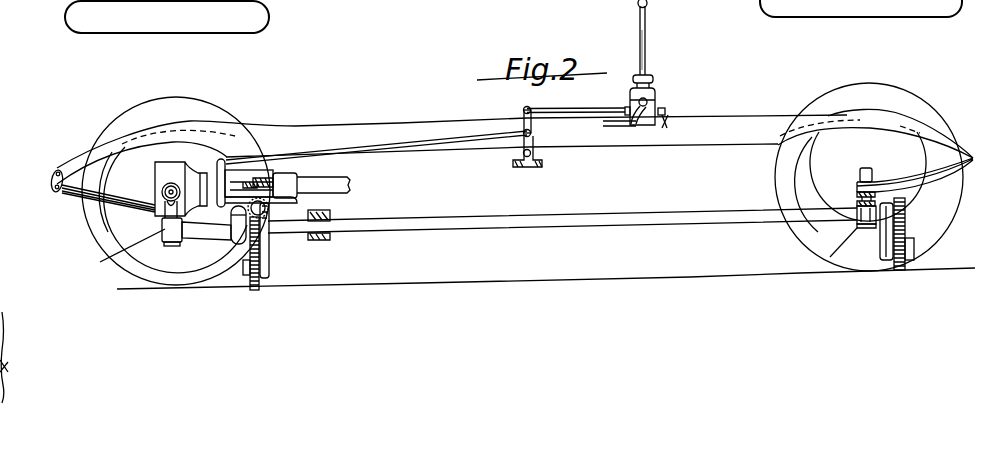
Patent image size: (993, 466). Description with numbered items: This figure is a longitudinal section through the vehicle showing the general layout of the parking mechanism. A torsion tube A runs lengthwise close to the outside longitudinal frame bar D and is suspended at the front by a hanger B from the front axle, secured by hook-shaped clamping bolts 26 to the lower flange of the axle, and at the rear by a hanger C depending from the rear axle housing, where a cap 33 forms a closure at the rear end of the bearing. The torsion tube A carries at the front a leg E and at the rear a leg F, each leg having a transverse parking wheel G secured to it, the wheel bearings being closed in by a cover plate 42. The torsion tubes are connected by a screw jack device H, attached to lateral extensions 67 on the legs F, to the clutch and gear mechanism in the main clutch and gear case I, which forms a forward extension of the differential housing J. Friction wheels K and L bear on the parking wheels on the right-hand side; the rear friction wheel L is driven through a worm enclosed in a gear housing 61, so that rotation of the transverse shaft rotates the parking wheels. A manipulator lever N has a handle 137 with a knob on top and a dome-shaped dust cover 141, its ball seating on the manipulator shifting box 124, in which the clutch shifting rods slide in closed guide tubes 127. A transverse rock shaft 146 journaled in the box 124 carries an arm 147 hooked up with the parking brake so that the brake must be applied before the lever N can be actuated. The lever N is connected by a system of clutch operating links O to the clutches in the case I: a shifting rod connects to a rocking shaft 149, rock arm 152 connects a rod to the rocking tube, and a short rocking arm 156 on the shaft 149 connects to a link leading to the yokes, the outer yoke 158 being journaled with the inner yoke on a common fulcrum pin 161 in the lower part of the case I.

The manipulator lever N is at (651, 33).
The handle 137 is at (647, 57).
The dome-shaped dust cover 141 is at (658, 78).
The transverse rock shaft 146 is at (632, 103).
The arm 147 is at (632, 125).
The manipulator shifting box 124 is at (664, 101).
The rock arm 152 is at (522, 113).
The short rocking arm 156 is at (525, 142).
The rocking shaft 149 is at (533, 165).
The longitudinal frame bar D is at (685, 117).
The closed guide tubes 127 is at (682, 128).
The clutch operating links O is at (433, 140).
The main clutch and gear case I is at (245, 170).
The screw jack device H is at (276, 184).
The outer yoke 158 is at (219, 160).
The differential housing J is at (155, 172).
The cap 33 is at (167, 225).
The hanger C is at (123, 252).
The common fulcrum pin 161 is at (206, 231).
The gear housing 61 is at (236, 233).
The rear friction wheel L is at (252, 232).
The lateral extensions 67 is at (266, 222).
The rear leg F is at (268, 250).
The parking wheel G is at (244, 289).
The torsion tubes A is at (499, 236).
The hanger B is at (858, 205).
The forward friction wheel K is at (905, 202).
The forward leg E is at (882, 247).
The cover plate 42 is at (914, 254).
The hook-shaped clamping bolts 26 is at (831, 250).